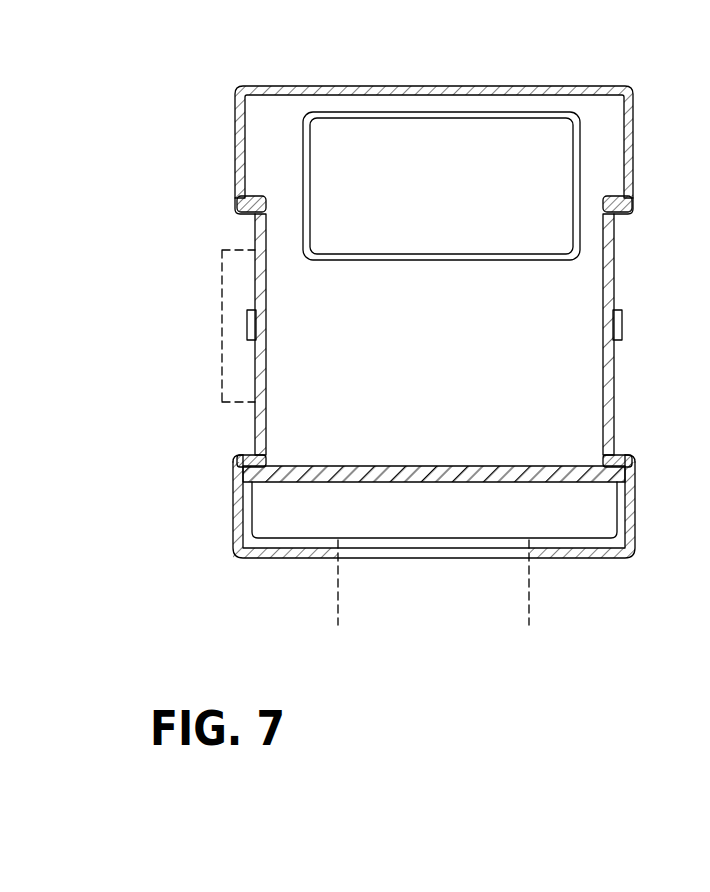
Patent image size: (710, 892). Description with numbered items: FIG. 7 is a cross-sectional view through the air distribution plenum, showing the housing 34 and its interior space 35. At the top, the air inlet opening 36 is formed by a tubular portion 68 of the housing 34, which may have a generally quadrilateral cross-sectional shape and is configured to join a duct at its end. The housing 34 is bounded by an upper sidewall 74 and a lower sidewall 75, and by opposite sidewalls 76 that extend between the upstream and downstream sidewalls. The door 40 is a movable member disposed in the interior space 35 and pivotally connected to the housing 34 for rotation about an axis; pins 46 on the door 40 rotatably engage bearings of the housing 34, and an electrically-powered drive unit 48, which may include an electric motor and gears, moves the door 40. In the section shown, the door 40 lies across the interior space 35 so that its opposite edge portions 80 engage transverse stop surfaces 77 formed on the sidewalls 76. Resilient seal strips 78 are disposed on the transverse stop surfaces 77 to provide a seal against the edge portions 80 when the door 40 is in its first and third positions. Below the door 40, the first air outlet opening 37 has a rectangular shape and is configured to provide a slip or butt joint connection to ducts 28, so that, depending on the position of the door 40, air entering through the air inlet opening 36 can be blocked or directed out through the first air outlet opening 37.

The ducts 28 is at (530, 590).
The housing 34 is at (434, 99).
The interior space 35 is at (444, 337).
The air inlet opening 36 is at (432, 205).
The first air outlet opening 37 is at (437, 540).
The door 40 is at (382, 462).
The pins 46 is at (250, 332).
The electrically-powered drive unit 48 is at (222, 308).
The tubular portion 68 is at (432, 97).
The upper sidewall 74 is at (478, 86).
The lower sidewall 75 is at (331, 560).
The opposite sidewalls 76 is at (255, 262).
The transverse stop surfaces 77 is at (243, 201).
The resilient seal strips 78 is at (258, 196).
The opposite edge portions 80 is at (236, 478).